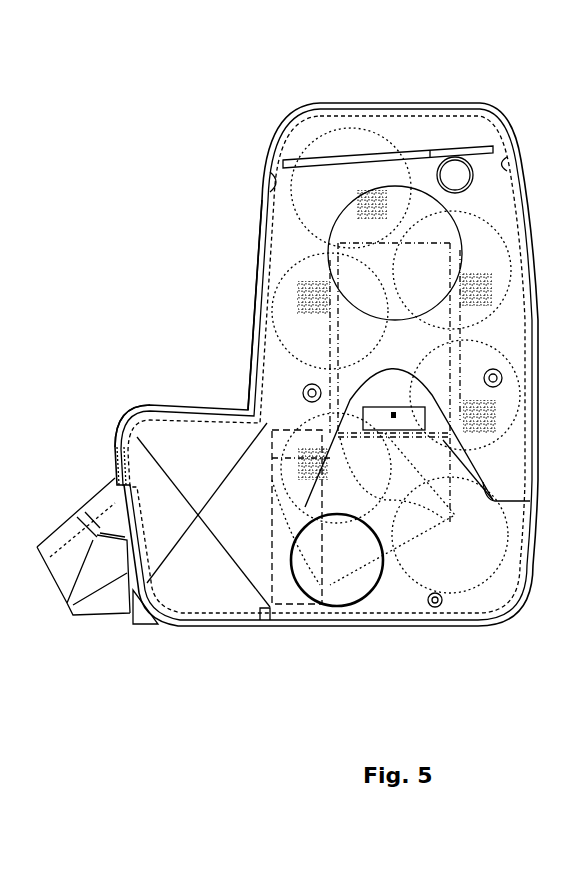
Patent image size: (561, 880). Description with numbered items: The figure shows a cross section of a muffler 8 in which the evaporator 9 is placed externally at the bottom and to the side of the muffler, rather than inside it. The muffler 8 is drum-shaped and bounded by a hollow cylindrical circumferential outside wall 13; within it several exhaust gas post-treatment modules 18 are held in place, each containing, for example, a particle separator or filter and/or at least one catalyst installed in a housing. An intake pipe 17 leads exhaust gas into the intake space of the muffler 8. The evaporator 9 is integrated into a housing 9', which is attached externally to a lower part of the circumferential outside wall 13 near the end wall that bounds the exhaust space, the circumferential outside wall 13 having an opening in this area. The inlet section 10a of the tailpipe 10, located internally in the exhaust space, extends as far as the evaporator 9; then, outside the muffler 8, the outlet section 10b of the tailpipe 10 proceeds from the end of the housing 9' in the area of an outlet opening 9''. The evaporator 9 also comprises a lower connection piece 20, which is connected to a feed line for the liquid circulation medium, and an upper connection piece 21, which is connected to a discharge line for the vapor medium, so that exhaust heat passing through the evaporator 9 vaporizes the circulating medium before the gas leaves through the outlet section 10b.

The muffler 8 is at (375, 88).
The circumferential outside wall 13 is at (253, 256).
The exhaust gas post-treatment modules 18 is at (317, 142).
The tailpipe 10 is at (466, 483).
The evaporator 9 is at (203, 477).
The housing 9' is at (125, 397).
The outlet opening 9'' is at (91, 475).
The upper connection piece 21 is at (298, 422).
The lower connection piece 20 is at (290, 600).
The intake pipe 17 is at (365, 582).
The inlet section 10a is at (410, 532).
The outlet section 10b is at (88, 605).